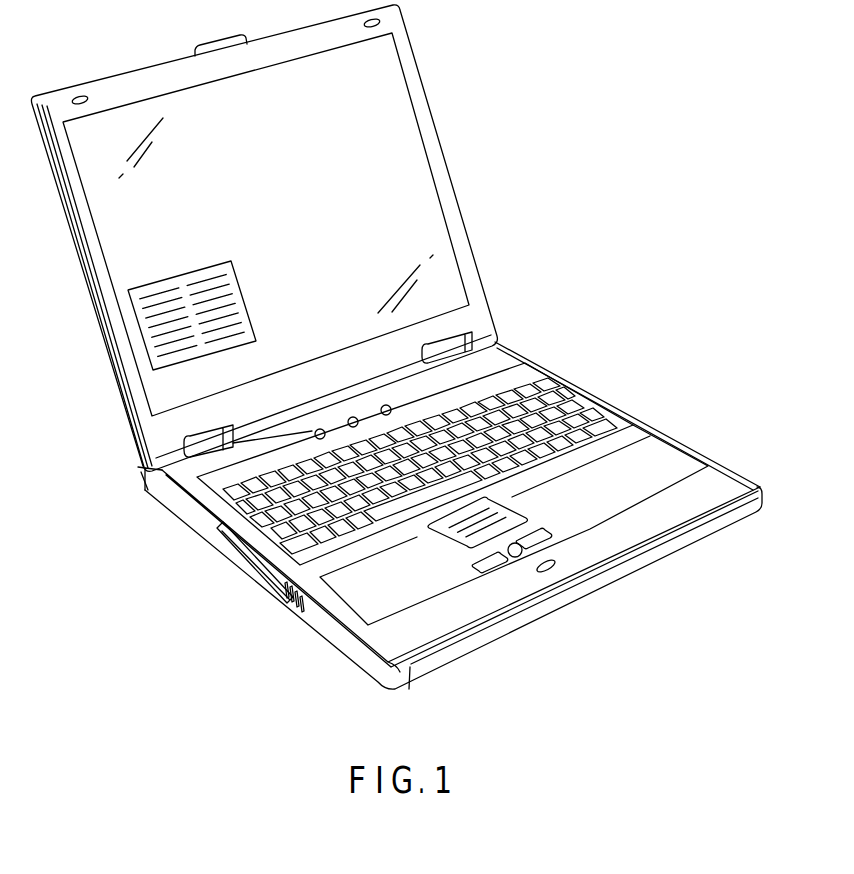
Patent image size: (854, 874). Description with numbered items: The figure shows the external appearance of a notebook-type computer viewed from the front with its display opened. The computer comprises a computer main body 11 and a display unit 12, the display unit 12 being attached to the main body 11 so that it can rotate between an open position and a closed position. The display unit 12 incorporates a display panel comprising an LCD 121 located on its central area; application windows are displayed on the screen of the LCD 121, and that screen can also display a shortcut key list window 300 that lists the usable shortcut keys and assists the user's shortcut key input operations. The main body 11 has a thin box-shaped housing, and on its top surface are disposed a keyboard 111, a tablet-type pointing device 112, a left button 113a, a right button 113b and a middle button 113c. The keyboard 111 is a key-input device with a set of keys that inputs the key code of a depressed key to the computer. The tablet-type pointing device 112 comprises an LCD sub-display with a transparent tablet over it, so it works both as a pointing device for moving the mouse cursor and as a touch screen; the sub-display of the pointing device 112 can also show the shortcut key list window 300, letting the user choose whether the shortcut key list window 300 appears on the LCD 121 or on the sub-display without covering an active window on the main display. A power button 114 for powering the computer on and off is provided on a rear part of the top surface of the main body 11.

The computer main body 11 is at (335, 640).
The display unit 12 is at (451, 201).
The LCD 121 is at (388, 122).
The keyboard 111 is at (580, 393).
The tablet-type pointing device 112 is at (529, 511).
The left button 113a is at (507, 570).
The right button 113b is at (548, 540).
The middle button 113c is at (548, 568).
The power button 114 is at (148, 490).
The shortcut key list window 300 is at (153, 337).